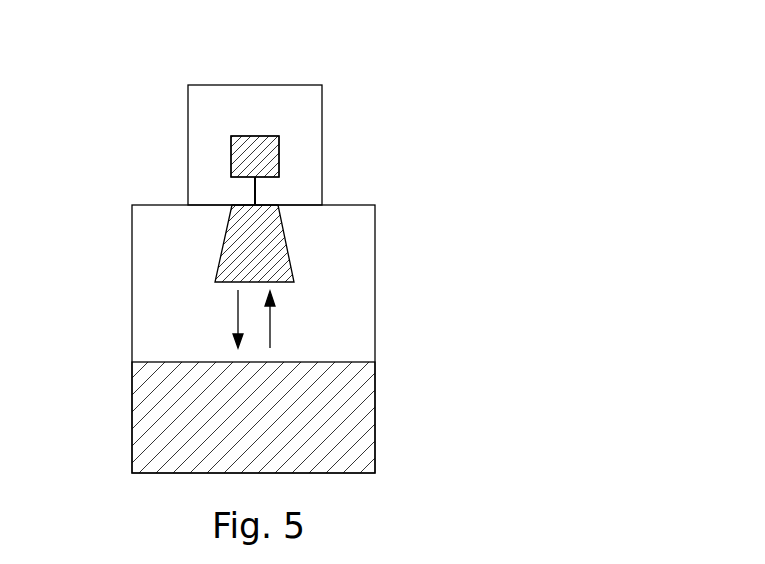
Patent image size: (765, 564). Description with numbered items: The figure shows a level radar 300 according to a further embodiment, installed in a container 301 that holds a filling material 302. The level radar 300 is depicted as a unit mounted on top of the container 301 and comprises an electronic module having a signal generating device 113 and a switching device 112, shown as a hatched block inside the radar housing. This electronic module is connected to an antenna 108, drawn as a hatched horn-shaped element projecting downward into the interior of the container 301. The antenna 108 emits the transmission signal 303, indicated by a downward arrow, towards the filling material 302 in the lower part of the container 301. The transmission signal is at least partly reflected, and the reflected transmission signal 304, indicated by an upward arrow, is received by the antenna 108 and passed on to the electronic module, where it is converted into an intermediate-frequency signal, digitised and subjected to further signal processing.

The level radar 300 is at (260, 100).
The container 301 is at (375, 291).
The filling material 302 is at (352, 418).
The switching device 112 is at (279, 156).
The signal generating device 113 is at (255, 156).
The antenna 108 is at (272, 243).
The transmission signal 303 is at (237, 311).
The reflected transmission signal 304 is at (270, 332).